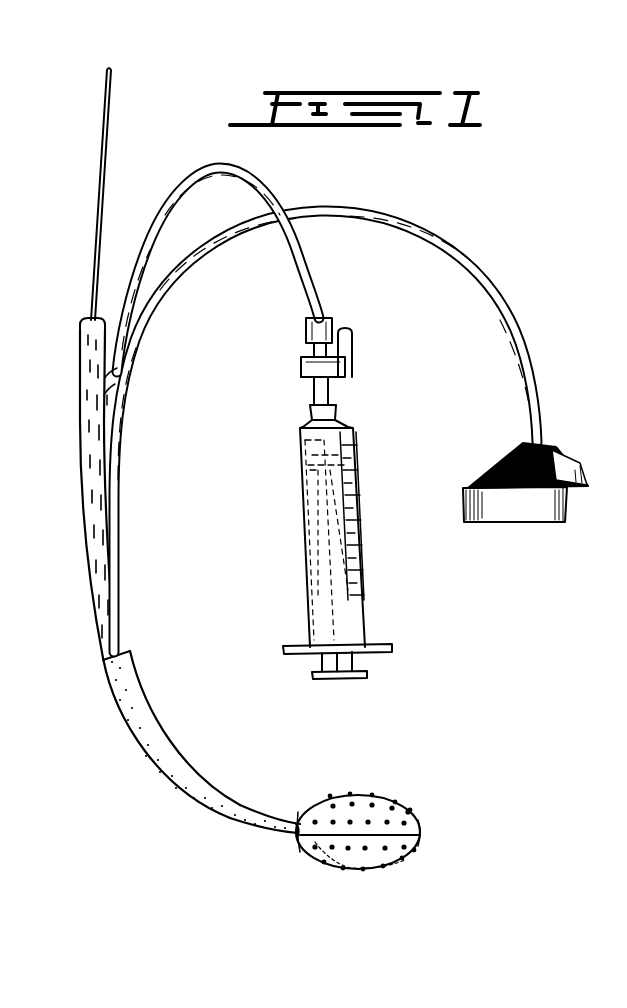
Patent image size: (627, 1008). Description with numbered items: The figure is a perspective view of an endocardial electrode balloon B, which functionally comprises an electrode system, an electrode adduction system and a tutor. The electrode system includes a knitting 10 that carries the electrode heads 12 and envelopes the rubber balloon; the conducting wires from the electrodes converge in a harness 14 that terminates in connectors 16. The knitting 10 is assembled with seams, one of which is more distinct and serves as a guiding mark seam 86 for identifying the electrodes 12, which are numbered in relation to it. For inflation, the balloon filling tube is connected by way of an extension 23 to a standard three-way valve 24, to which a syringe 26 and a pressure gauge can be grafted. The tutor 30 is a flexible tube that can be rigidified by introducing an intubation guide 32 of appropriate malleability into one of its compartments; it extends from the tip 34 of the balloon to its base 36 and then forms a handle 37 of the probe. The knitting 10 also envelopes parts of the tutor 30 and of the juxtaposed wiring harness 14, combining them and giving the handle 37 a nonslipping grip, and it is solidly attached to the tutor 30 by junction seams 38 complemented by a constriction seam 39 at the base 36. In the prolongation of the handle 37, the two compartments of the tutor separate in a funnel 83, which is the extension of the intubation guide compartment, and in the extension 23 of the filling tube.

The knitting 10 is at (379, 816).
The electrode heads 12 is at (396, 798).
The harness 14 is at (480, 278).
The connectors 16 is at (568, 512).
The extension 23 is at (285, 196).
The three-way valve 24 is at (352, 364).
The syringe 26 is at (360, 482).
The tutor 30 is at (76, 442).
The intubation guide 32 is at (108, 134).
The tip 34 is at (420, 835).
The base 36 is at (298, 800).
The handle 37 is at (160, 716).
The junction seams 38 is at (222, 810).
The constriction seam 39 is at (292, 834).
The funnel 83 is at (80, 329).
The guiding mark seam 86 is at (347, 838).
The endocardial electrode balloon B is at (158, 778).